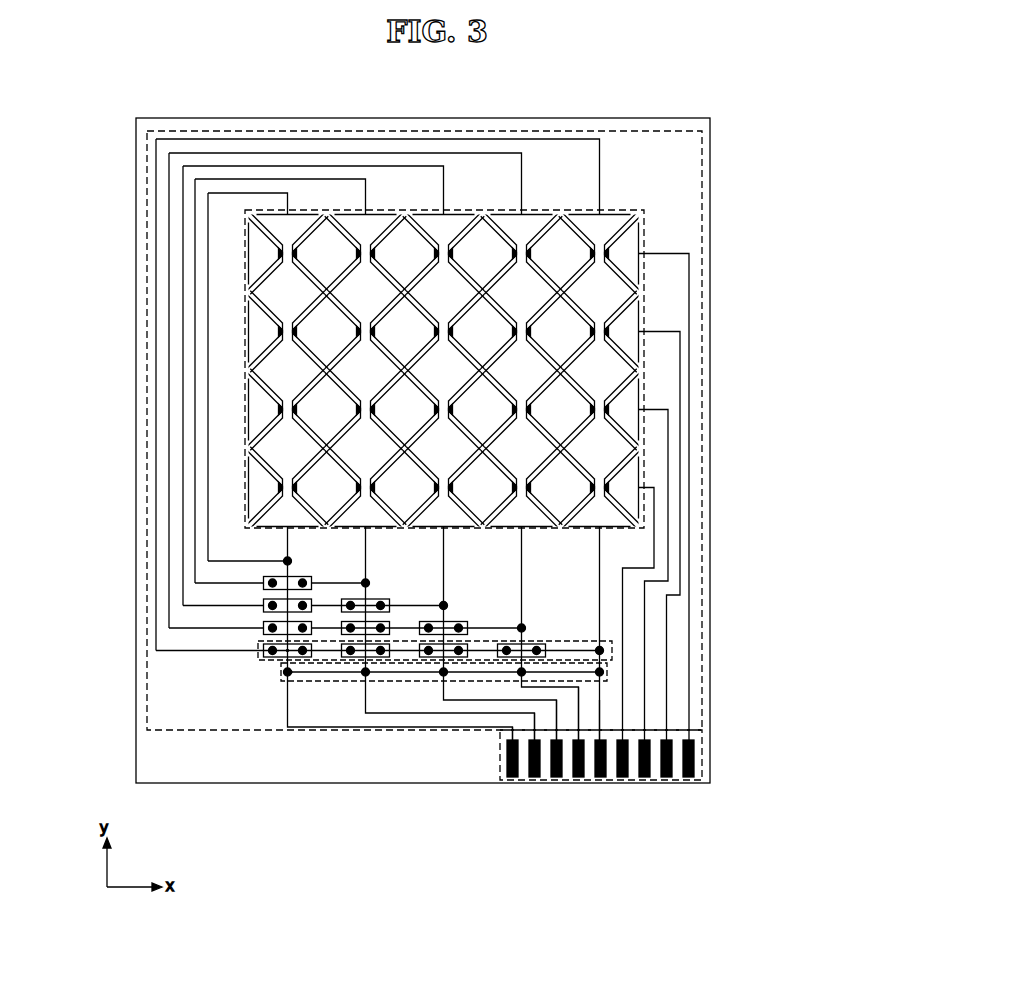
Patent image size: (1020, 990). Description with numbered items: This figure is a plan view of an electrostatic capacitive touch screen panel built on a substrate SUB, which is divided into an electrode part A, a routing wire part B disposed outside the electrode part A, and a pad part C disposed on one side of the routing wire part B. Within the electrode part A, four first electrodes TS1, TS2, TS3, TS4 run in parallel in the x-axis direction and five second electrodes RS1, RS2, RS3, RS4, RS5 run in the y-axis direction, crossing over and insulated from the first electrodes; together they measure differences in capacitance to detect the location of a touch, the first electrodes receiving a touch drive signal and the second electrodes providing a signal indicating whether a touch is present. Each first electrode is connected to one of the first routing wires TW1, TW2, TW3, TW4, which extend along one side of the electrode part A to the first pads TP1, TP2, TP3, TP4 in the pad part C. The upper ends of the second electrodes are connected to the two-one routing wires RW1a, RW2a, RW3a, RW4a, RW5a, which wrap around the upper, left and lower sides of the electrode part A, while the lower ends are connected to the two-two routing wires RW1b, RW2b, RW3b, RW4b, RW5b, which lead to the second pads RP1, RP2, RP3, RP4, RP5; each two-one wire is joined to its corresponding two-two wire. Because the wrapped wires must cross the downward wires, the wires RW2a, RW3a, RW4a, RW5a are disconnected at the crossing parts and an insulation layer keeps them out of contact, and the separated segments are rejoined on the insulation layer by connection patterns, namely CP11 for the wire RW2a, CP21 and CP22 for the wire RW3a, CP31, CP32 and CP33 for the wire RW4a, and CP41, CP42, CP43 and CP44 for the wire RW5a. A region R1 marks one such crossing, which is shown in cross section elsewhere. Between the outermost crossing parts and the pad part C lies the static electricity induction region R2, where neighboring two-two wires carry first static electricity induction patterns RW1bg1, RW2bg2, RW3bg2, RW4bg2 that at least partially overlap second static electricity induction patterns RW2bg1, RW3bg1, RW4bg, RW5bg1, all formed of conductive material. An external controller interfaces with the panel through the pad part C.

The substrate SUB is at (711, 722).
The electrode part A is at (638, 208).
The routing wire part B is at (703, 690).
The pad part C is at (703, 754).
The first electrode TS1 is at (444, 254).
The first electrode TS2 is at (444, 332).
The first electrode TS3 is at (444, 410).
The first electrode TS4 is at (444, 488).
The second electrode RS1 is at (297, 213).
The second electrode RS2 is at (375, 213).
The second electrode RS3 is at (452, 213).
The second electrode RS4 is at (530, 213).
The second electrode RS5 is at (607, 213).
The first routing wire TW1 is at (691, 384).
The first routing wire TW2 is at (682, 427).
The first routing wire TW3 is at (670, 470).
The first routing wire TW4 is at (656, 518).
The first 2-1 routing wire RW1a is at (208, 500).
The second 2-1 routing wire RW2a is at (195, 534).
The third 2-1 routing wire RW3a is at (183, 568).
The fourth 2-1 routing wire RW4a is at (169, 603).
The fifth 2-1 routing wire RW5a is at (156, 640).
The first 2-2 routing wire RW1b is at (512, 780).
The second 2-2 routing wire RW2b is at (534, 780).
The third 2-2 routing wire RW3b is at (556, 780).
The fourth 2-2 routing wire RW4b is at (578, 780).
The fifth 2-2 routing wire RW5b is at (600, 780).
The first static electricity induction pattern RW1bg1 is at (302, 683).
The second static electricity induction pattern RW2bg1 is at (350, 683).
The first static electricity induction pattern RW2bg2 is at (372, 683).
The second static electricity induction pattern RW3bg1 is at (415, 683).
The first static electricity induction pattern RW3bg2 is at (445, 683).
The second static electricity induction pattern RW4bg is at (520, 683).
The first static electricity induction pattern RW4bg2 is at (560, 683).
The second static electricity induction pattern RW5bg1 is at (609, 676).
The connection pattern CP11 is at (305, 576).
The connection pattern CP21 is at (308, 598).
The connection pattern CP22 is at (381, 599).
The connection pattern CP31 is at (263, 633).
The connection pattern CP32 is at (385, 622).
The connection pattern CP33 is at (460, 622).
The connection pattern CP41 is at (271, 657).
The connection pattern CP42 is at (337, 657).
The connection pattern CP43 is at (462, 643).
The connection pattern CP44 is at (530, 644).
The region R1 is at (283, 683).
The static electricity induction region R2 is at (290, 683).
The second pad RP1 is at (506, 772).
The second pad RP2 is at (530, 779).
The second pad RP3 is at (552, 780).
The second pad RP4 is at (574, 780).
The second pad RP5 is at (595, 776).
The first pad TP1 is at (688, 780).
The first pad TP2 is at (666, 780).
The first pad TP3 is at (644, 780).
The first pad TP4 is at (622, 780).